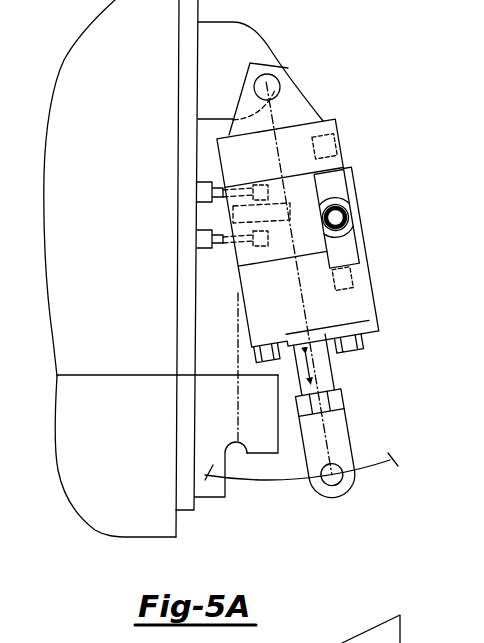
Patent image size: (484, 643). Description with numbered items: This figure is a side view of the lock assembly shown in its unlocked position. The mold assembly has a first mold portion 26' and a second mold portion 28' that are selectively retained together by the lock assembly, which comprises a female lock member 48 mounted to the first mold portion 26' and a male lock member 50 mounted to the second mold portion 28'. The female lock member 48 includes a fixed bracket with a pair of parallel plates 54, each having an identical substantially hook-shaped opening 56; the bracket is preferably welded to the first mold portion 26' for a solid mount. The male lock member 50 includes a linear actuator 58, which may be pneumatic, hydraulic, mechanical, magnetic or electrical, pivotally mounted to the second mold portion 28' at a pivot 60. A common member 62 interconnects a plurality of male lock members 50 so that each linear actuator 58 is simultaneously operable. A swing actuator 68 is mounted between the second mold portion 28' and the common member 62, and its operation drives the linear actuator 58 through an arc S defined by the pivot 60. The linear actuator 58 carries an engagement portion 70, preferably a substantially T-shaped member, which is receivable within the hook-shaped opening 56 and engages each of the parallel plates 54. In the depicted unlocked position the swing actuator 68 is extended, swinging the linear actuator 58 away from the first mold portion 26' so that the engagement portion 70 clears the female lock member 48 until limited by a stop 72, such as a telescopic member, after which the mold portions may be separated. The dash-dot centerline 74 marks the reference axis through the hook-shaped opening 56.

The first mold portion 26' is at (166, 456).
The second mold portion 28' is at (91, 188).
The female lock member 48 is at (201, 536).
The male lock member 50 is at (362, 112).
The parallel plate 54 is at (224, 414).
The hook-shaped opening 56 is at (240, 462).
The linear actuator 58 is at (333, 375).
The pivot 60 is at (277, 56).
The common member 62 is at (371, 288).
The swing actuator 68 is at (207, 215).
The engagement portion 70 is at (347, 432).
The stop 72 is at (197, 239).
The centerline / plate 74 is at (238, 328).
The arc S is at (296, 482).